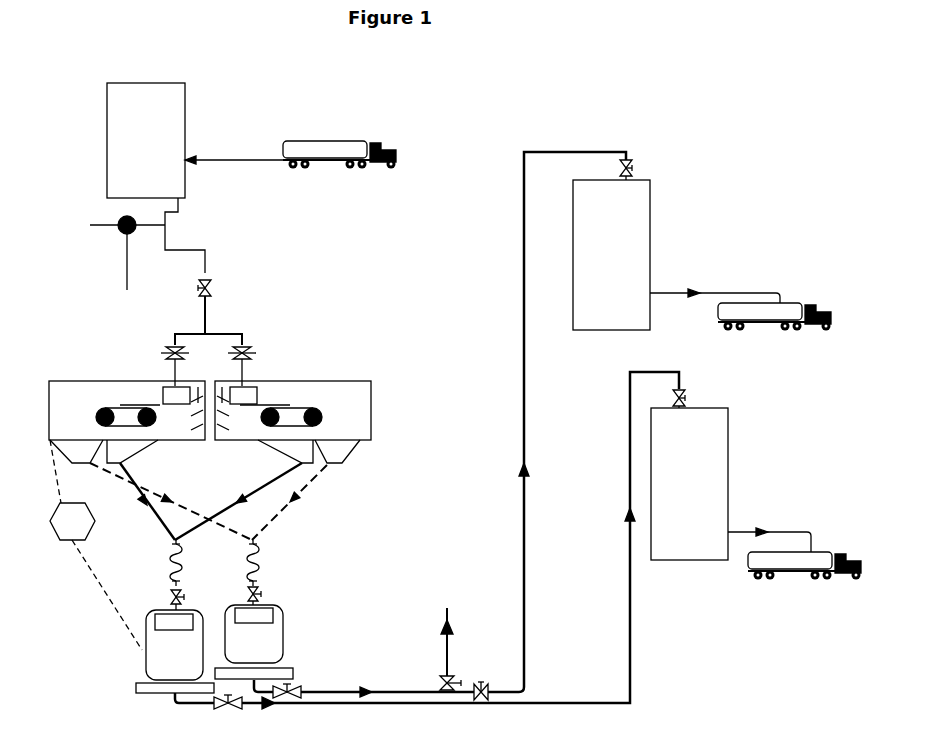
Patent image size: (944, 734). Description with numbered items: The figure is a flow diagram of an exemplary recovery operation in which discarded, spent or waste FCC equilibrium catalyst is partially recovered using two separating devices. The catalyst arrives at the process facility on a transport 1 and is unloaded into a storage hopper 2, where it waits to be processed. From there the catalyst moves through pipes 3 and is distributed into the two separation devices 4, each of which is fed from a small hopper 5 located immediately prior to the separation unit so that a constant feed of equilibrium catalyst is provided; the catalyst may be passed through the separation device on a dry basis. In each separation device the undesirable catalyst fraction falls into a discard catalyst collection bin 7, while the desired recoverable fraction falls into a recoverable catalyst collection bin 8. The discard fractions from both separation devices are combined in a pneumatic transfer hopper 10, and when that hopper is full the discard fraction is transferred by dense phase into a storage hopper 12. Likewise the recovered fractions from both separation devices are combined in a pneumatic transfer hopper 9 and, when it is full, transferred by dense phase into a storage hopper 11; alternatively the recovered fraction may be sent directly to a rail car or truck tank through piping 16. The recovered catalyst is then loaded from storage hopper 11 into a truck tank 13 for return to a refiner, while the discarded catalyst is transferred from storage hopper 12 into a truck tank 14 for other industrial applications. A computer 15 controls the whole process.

The transport 1 is at (290, 155).
The storage hopper 2 is at (156, 146).
The pipes 3 is at (208, 333).
The separation devices 4 is at (210, 395).
The process unit hopper 5 is at (217, 393).
The discard catalyst collection bin 7 is at (238, 497).
The recoverable catalyst collection bin 8 is at (340, 451).
The pneumatic transfer hopper 9 is at (254, 642).
The pneumatic transfer hopper 10 is at (175, 651).
The storage hopper 11 is at (605, 257).
The storage hopper 12 is at (702, 487).
The truck tank 13 is at (740, 302).
The truck tank 14 is at (794, 550).
The computer 15 is at (92, 545).
The piping 16 is at (463, 638).